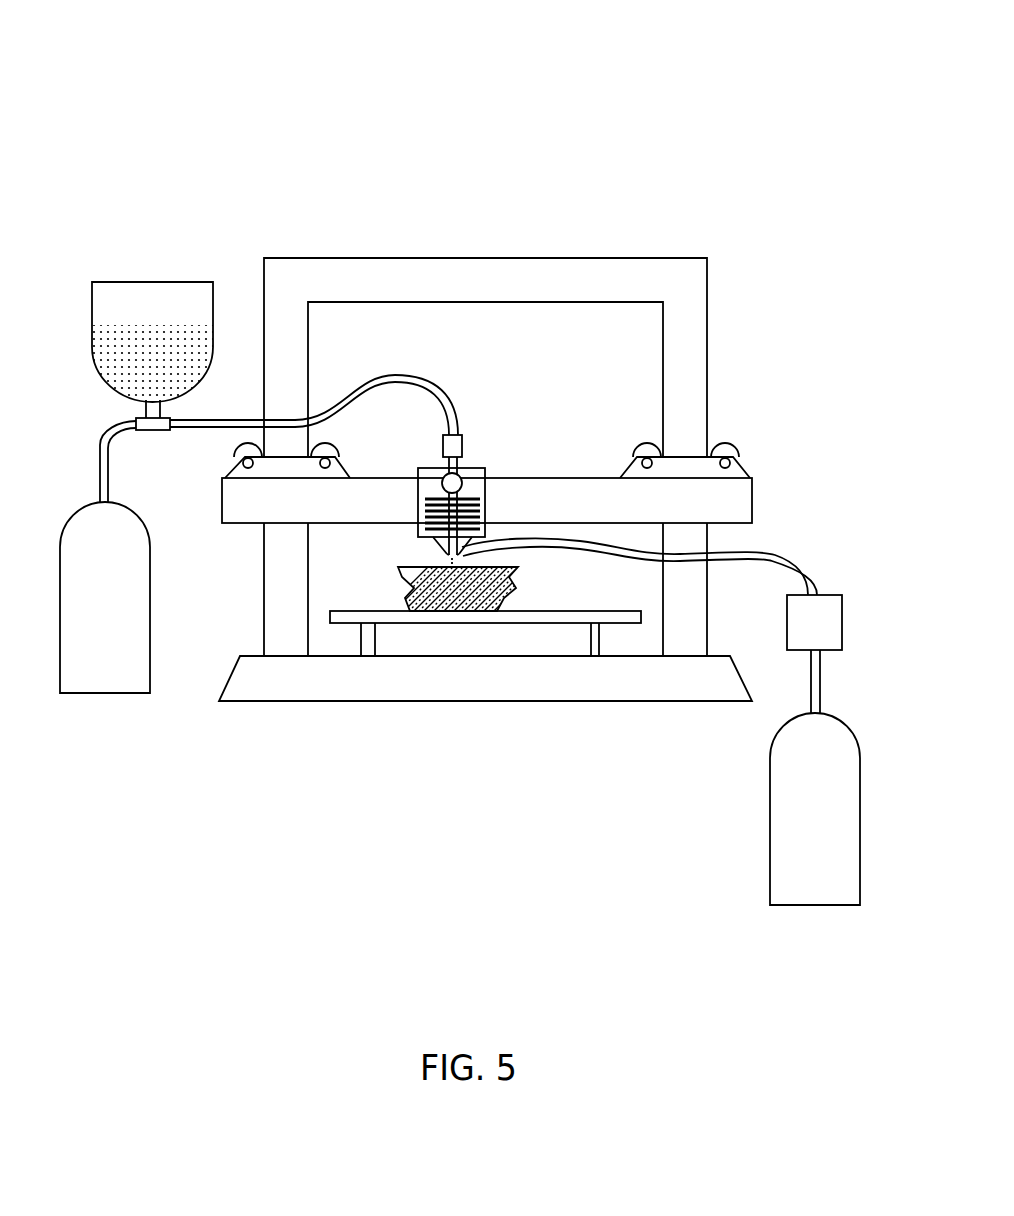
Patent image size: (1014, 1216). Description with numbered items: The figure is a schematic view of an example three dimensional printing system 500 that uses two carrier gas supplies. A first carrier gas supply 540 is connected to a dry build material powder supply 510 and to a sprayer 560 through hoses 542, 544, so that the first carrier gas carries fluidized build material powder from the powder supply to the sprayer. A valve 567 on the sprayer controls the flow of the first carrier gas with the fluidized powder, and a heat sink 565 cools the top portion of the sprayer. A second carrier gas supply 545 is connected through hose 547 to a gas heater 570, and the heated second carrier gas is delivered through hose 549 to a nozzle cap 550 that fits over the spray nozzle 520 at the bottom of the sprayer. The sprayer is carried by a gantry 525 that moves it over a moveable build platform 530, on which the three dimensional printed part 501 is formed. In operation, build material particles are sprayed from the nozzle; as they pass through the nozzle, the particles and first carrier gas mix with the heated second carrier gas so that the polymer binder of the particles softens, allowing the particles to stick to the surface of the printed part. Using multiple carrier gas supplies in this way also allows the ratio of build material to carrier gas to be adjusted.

The three dimensional printing system 500 is at (166, 50).
The 3D printed part 501 is at (410, 587).
The dry build material powder supply 510 is at (143, 282).
The spray nozzle 520 is at (470, 558).
The gantry 525 is at (740, 470).
The moveable build platform 530 is at (361, 657).
The first carrier gas supply 540 is at (103, 693).
The hose 542 is at (100, 432).
The hose 544 is at (395, 376).
The second carrier gas supply 545 is at (800, 905).
The hose 547 is at (820, 697).
The hose 549 is at (800, 557).
The nozzle cap 550 is at (443, 547).
The sprayer 560 is at (462, 444).
The heat sink 565 is at (486, 518).
The valve 567 is at (486, 480).
The gas heater 570 is at (843, 627).